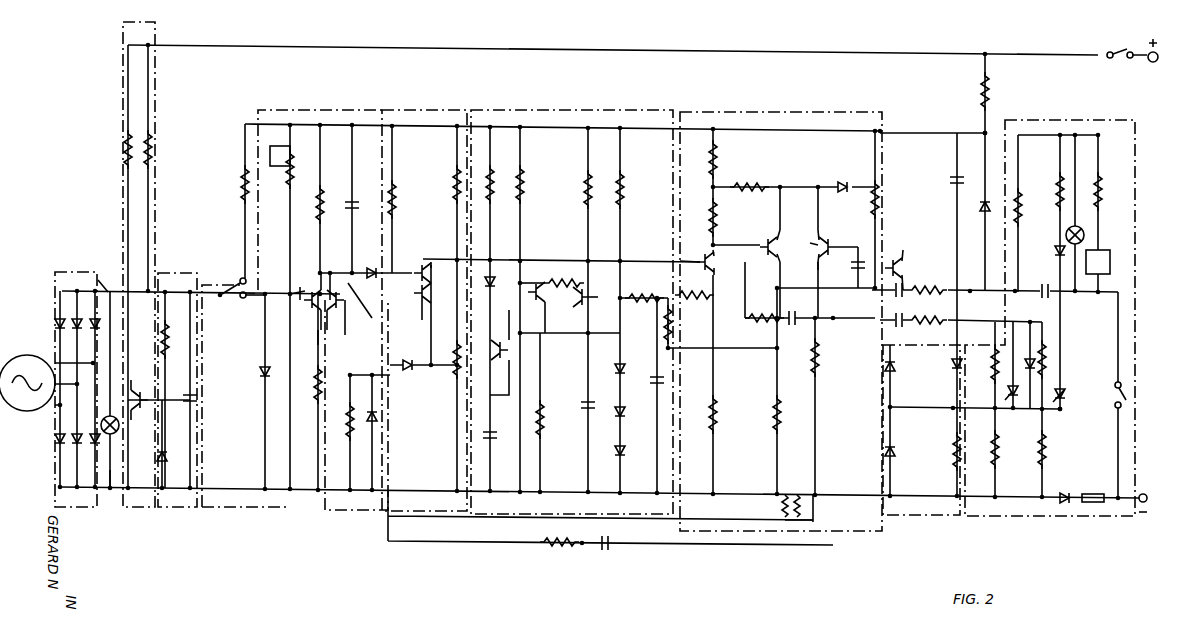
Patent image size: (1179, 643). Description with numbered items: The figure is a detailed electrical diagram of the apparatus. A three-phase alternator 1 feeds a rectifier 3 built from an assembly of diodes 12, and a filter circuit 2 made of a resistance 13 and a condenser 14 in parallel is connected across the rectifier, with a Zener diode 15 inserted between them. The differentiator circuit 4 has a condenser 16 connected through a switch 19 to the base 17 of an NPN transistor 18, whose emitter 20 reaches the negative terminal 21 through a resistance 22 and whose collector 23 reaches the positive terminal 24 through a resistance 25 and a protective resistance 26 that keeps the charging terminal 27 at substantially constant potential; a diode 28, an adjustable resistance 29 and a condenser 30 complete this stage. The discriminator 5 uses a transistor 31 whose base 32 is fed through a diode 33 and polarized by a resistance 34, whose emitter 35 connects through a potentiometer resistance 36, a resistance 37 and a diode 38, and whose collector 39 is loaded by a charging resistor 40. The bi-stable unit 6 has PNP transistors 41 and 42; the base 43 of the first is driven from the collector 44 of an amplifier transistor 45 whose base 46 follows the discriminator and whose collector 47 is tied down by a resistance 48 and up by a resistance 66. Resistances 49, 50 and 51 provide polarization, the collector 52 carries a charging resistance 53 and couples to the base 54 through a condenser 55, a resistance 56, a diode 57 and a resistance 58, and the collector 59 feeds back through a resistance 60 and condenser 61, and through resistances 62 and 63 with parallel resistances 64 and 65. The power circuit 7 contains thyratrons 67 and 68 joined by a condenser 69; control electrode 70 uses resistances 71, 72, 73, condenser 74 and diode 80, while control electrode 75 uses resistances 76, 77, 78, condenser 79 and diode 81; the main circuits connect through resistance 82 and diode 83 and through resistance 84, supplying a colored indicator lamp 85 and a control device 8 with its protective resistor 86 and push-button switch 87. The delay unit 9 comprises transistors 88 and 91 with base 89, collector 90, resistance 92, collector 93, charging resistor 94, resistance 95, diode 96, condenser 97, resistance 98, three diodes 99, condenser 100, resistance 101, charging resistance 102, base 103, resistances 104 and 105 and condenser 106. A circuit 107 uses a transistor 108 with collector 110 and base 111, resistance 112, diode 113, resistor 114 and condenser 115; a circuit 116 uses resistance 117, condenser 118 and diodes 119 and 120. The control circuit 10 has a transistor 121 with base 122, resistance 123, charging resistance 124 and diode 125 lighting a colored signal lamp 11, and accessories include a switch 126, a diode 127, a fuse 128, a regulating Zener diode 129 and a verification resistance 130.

The alternator 1 is at (25, 411).
The filter circuit 2 is at (182, 510).
The rectifier 3 is at (55, 508).
The differentiator circuit 4 is at (230, 510).
The discriminator 5 is at (428, 110).
The bi-stable unit 6 is at (798, 113).
The power circuit 7 is at (1040, 120).
The control device 8 is at (1112, 258).
The delay unit 9 is at (572, 111).
The control circuit 10 is at (133, 510).
The colored signal lamp 11 is at (118, 496).
The diodes 12 is at (92, 432).
The resistance 13 is at (168, 345).
The condenser 14 is at (188, 396).
The Zener diode 15 is at (100, 280).
The condenser 16 is at (222, 300).
The base 17 is at (310, 311).
The transistor 18 is at (300, 291).
The switch 19 is at (243, 300).
The emitter 20 is at (324, 310).
The negative terminal 21 is at (1146, 494).
The resistance 22 is at (316, 395).
The collector 23 is at (320, 285).
The positive terminal 24 is at (1158, 66).
The resistance 25 is at (318, 200).
The resistance 26 is at (990, 90).
The charging terminal 27 is at (984, 131).
The diode 28 is at (258, 376).
The adjustable resistance 29 is at (292, 167).
The condenser 30 is at (352, 198).
The transistor 31 is at (418, 270).
The base 32 is at (410, 306).
The diode 33 is at (372, 267).
The resistance 34 is at (395, 186).
The emitter 35 is at (434, 288).
The resistance 36 is at (457, 355).
The resistance 37 is at (456, 182).
The diode 38 is at (410, 372).
The collector 39 is at (432, 262).
The charging resistor 40 is at (492, 180).
The transistor 41 is at (792, 275).
The transistor 42 is at (813, 240).
The base 43 is at (760, 246).
The collector 44 is at (726, 258).
The transistor 45 is at (702, 255).
The base 46 is at (690, 262).
The collector 47 is at (716, 273).
The resistance 48 is at (717, 416).
The resistance 49 is at (716, 162).
The resistance 50 is at (716, 216).
The resistance 51 is at (752, 184).
The collector 52 is at (754, 290).
The charging resistance 53 is at (780, 416).
The base 54 is at (830, 240).
The condenser 55 is at (855, 268).
The resistance 56 is at (874, 187).
The diode 57 is at (840, 182).
The resistance 58 is at (897, 260).
The collector 59 is at (816, 260).
The resistance 60 is at (752, 322).
The condenser 61 is at (792, 325).
The first resistance 62 is at (814, 357).
The second resistance 63 is at (316, 350).
The resistance 64 is at (782, 507).
The variable resistance 65 is at (803, 522).
The resistance 66 is at (690, 300).
The thyratron 67 is at (1064, 390).
The thyratron 68 is at (1018, 406).
The condenser 69 is at (1043, 286).
The control electrode 70 is at (1066, 411).
The resistance 71 is at (1050, 442).
The first resistance 72 is at (1050, 348).
The second resistance 73 is at (930, 316).
The condenser 74 is at (905, 316).
The control electrode 75 is at (1010, 426).
The resistance 76 is at (1000, 453).
The first resistance 77 is at (1005, 409).
The second resistance 78 is at (930, 283).
The condenser 79 is at (905, 283).
The diode 80 is at (1030, 345).
The diode 81 is at (954, 360).
The resistance 82 is at (1058, 190).
The diode 83 is at (1054, 254).
The resistance 84 is at (1021, 218).
The colored indicator lamp 85 is at (1078, 228).
The protective resistor 86 is at (1102, 200).
The switch 87 is at (1124, 392).
The transistor 88 is at (524, 294).
The base 89 is at (550, 280).
The collector 90 is at (592, 287).
The transistor 91 is at (570, 322).
The resistance 92 is at (559, 312).
The collector 93 is at (520, 282).
The charging resistor 94 is at (522, 182).
The resistance 95 is at (510, 351).
The diode 96 is at (484, 272).
The condenser 97 is at (498, 437).
The resistance 98 is at (624, 192).
The diodes 99 is at (631, 402).
The condenser 100 is at (586, 400).
The resistance 101 is at (538, 418).
The charging resistance 102 is at (587, 194).
The base 103 is at (636, 294).
The resistance 104 is at (657, 323).
The resistance 105 is at (666, 332).
The condenser 106 is at (665, 381).
The circuit 107 is at (340, 510).
The transistor 108 is at (343, 319).
The collector 110 is at (332, 270).
The base 111 is at (365, 303).
The resistance 112 is at (345, 432).
The diode 113 is at (378, 432).
The resistor 114 is at (545, 548).
The condenser 115 is at (608, 551).
The circuit 116 is at (910, 516).
The resistance 117 is at (952, 452).
The condenser 118 is at (952, 179).
The diode 119 is at (896, 367).
The diode 120 is at (896, 446).
The transistor 121 is at (118, 432).
The base 122 is at (135, 412).
The resistance 123 is at (152, 150).
The charging resistance 124 is at (124, 150).
The diode 125 is at (157, 458).
The switch 126 is at (1116, 60).
The diode 127 is at (1066, 505).
The fuse 128 is at (1093, 503).
The Zener diode 129 is at (982, 212).
The resistance 130 is at (242, 186).